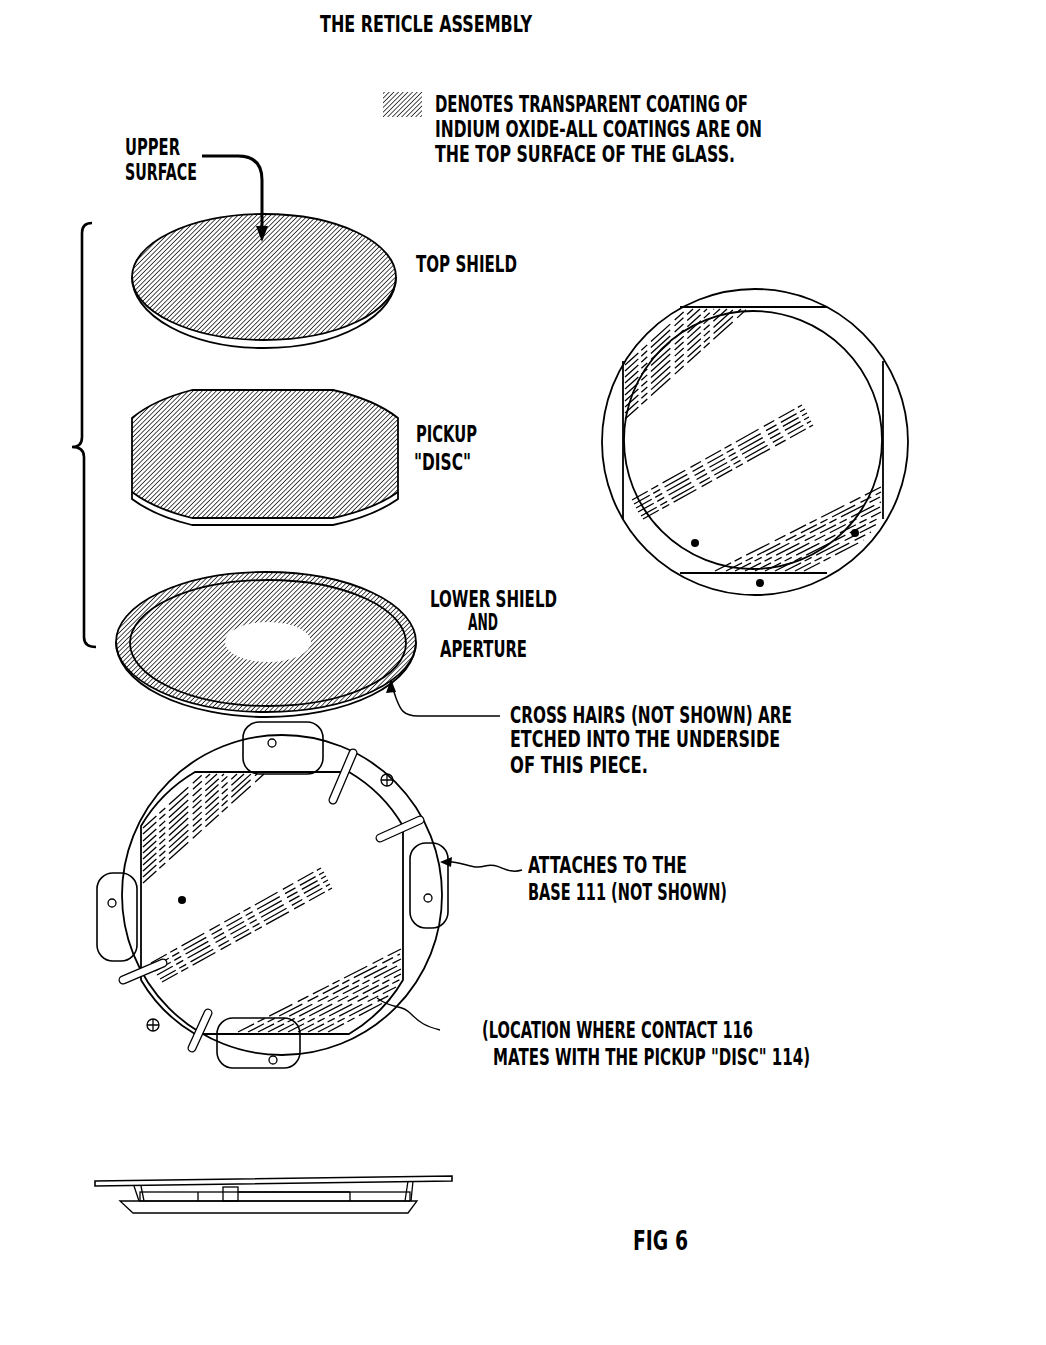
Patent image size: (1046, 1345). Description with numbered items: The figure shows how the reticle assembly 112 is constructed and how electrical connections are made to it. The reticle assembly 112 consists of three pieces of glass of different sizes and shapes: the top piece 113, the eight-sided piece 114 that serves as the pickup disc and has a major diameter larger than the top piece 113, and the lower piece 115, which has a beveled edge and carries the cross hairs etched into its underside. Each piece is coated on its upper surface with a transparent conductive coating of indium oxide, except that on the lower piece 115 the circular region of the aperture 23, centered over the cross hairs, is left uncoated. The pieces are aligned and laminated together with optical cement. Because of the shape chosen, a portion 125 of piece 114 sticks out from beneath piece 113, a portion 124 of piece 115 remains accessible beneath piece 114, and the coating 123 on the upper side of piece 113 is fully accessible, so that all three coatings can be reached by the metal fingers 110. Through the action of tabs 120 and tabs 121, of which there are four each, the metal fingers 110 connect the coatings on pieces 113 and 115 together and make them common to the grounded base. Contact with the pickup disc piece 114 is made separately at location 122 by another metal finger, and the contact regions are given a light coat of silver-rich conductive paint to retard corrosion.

The reticle assembly 112 is at (225, 895).
The top piece of glass 113 is at (380, 313).
The pickup disc glass piece 114 is at (385, 505).
The lower piece of glass 115 is at (388, 590).
The aperture 23 is at (305, 638).
The metal fingers 110 is at (432, 826).
The tabs 120 is at (378, 838).
The tabs 121 is at (300, 782).
The contact location 122 is at (427, 1020).
The coating on the upper side of piece 113 123 is at (695, 543).
The accessible portion of piece 115 124 is at (760, 583).
The protruding portion of piece 114 125 is at (855, 533).